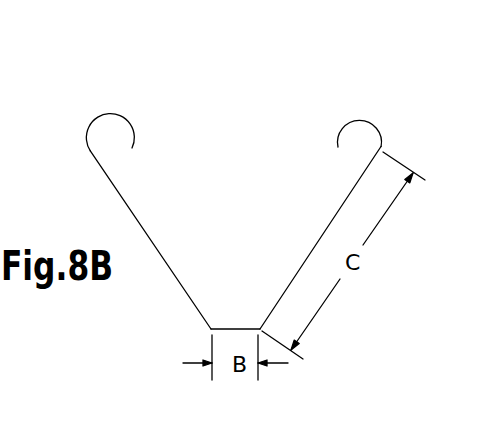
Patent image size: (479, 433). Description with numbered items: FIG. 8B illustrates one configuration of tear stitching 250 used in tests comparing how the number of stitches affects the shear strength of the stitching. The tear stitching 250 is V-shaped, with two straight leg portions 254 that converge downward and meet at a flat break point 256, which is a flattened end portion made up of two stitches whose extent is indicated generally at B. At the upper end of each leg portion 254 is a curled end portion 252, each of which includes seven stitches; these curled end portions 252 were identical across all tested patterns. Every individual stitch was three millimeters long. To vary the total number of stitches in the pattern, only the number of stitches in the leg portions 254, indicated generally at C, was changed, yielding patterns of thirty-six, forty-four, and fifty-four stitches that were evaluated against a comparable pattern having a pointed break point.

The tear stitching 250 is at (216, 101).
The curled end portions 252 is at (108, 112).
The leg portions 254 is at (143, 222).
The flat break point 256 is at (235, 325).